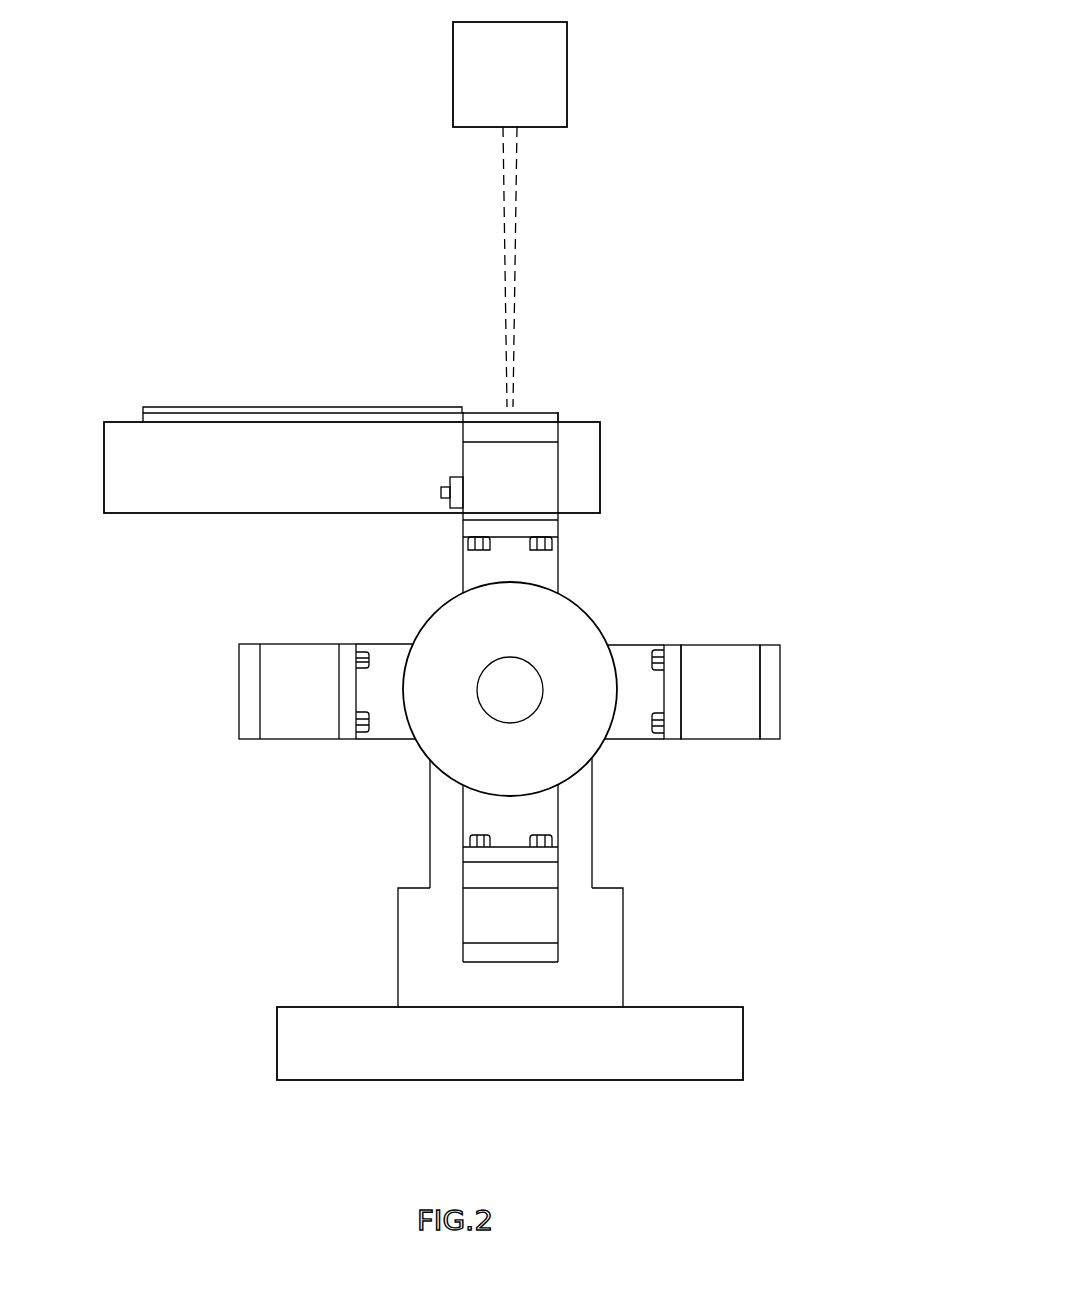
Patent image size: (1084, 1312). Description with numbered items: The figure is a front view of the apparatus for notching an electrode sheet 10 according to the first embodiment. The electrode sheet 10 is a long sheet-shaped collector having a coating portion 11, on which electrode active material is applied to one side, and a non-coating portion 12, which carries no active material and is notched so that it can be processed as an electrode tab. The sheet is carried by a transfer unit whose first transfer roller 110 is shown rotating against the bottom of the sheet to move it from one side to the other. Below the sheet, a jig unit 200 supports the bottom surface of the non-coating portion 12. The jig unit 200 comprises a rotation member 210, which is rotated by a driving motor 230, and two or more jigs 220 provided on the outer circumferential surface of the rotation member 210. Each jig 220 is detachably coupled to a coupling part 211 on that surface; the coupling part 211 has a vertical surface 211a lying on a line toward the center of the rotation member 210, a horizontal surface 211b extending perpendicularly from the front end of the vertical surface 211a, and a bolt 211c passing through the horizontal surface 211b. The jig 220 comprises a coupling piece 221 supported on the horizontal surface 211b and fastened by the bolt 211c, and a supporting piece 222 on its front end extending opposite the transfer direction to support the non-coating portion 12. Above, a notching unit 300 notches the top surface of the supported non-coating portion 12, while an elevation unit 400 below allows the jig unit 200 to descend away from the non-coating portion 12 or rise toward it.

The electrode sheet 10 is at (350, 348).
The coating portion 11 is at (277, 411).
The non-coating portion 12 is at (282, 327).
The first transfer roller 110 is at (585, 470).
The jig unit 200 is at (567, 736).
The rotation member 210 is at (570, 618).
The coupling part 211 is at (684, 765).
The vertical surface 211a is at (630, 728).
The horizontal surface 211b is at (713, 715).
The bolt 211c is at (657, 727).
The jig 220 is at (750, 733).
The coupling piece 221 is at (726, 655).
The supporting piece 222 is at (813, 692).
The driving motor 230 is at (577, 800).
The notching unit 300 is at (555, 75).
The elevation unit 400 is at (612, 948).